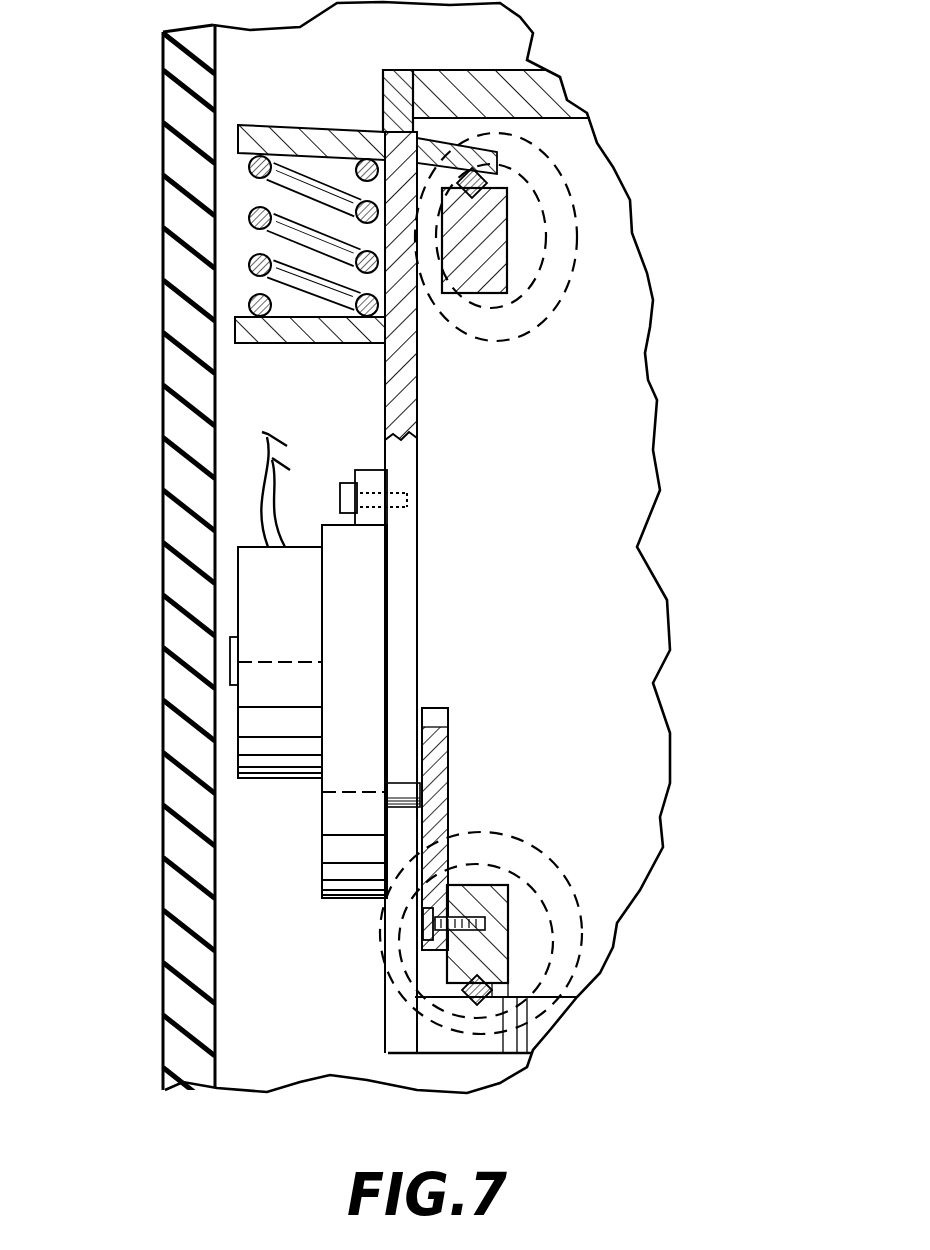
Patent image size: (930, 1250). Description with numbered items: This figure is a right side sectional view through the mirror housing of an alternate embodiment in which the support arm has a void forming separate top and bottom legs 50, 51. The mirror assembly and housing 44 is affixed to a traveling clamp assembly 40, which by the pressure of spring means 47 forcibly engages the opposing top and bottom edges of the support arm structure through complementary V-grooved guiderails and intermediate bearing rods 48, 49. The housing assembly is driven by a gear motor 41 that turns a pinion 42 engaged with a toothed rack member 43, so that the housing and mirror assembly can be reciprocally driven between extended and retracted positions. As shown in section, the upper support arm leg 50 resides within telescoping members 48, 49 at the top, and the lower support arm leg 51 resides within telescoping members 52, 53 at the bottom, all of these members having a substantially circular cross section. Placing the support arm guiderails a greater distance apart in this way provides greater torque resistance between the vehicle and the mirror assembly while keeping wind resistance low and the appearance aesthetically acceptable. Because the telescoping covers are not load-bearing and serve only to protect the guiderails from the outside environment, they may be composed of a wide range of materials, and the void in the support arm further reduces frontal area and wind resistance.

The traveling clamp assembly 40 is at (417, 423).
The gear motor 41 is at (342, 638).
The pinion 42 is at (448, 760).
The toothed rack member 43 is at (428, 912).
The mirror assembly and housing 44 is at (163, 812).
The spring means 47 is at (250, 257).
The telescoping member 48 is at (495, 180).
The telescoping member 49 is at (505, 297).
The top leg 50 is at (487, 253).
The bottom leg 51 is at (517, 980).
The telescoping member 52 is at (550, 863).
The telescoping member 53 is at (553, 950).